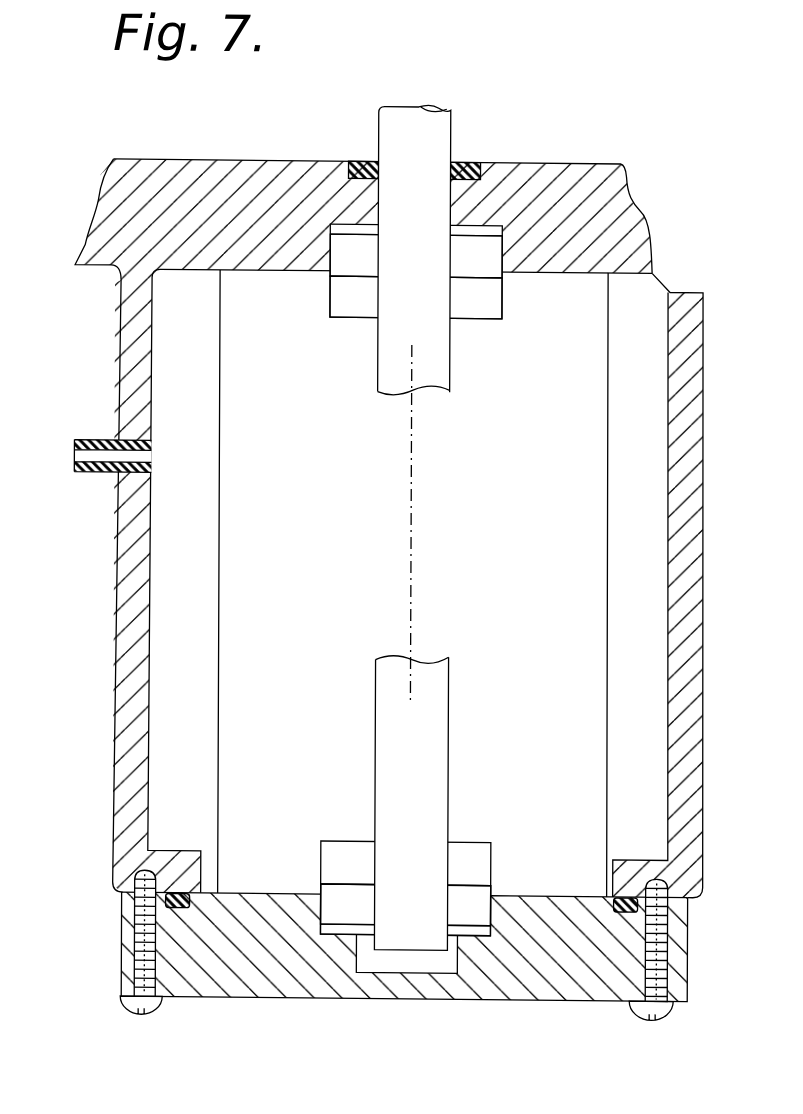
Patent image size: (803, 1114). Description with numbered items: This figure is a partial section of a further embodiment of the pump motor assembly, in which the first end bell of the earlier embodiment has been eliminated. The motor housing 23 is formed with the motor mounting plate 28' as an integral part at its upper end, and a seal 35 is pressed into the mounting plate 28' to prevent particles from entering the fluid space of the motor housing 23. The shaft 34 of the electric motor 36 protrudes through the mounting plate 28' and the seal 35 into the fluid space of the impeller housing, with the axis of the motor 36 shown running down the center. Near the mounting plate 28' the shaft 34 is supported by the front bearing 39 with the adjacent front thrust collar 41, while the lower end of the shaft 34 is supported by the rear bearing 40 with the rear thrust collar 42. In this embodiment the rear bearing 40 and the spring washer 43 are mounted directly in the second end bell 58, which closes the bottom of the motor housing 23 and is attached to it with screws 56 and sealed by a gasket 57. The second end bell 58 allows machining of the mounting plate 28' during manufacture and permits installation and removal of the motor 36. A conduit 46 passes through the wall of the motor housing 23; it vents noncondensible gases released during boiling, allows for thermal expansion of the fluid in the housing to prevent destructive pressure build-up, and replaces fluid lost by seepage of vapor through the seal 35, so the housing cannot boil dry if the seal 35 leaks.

The motor housing 23 is at (121, 361).
The motor mounting plate 28' is at (383, 187).
The shaft 34 is at (417, 119).
The seal 35 is at (462, 157).
The electric motor 36 is at (452, 539).
The front bearing 39 is at (488, 263).
The rear bearing 40 is at (497, 889).
The front thrust collar 41 is at (485, 309).
The rear thrust collar 42 is at (330, 846).
The spring washer 43 is at (490, 227).
The conduit 46 is at (103, 470).
The screws 56 is at (137, 1017).
The gasket 57 is at (188, 906).
The second end bell 58 is at (428, 982).